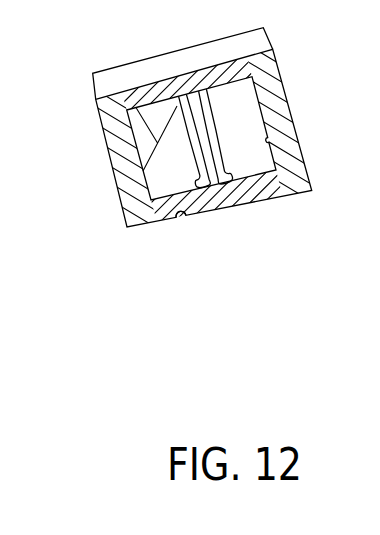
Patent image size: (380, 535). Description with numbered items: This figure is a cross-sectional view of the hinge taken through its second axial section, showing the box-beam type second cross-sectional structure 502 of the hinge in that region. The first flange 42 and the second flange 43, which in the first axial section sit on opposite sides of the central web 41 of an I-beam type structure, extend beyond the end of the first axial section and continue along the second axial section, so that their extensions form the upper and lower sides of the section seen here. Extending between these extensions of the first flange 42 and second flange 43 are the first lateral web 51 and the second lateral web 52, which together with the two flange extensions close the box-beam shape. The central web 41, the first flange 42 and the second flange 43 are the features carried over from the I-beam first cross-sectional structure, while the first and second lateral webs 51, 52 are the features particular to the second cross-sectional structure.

The housing 502 is at (307, 78).
The central web 41 is at (190, 143).
The first flange 42 is at (103, 102).
The second flange 43 is at (152, 210).
The first lateral web 51 is at (110, 158).
The second lateral web 52 is at (297, 157).